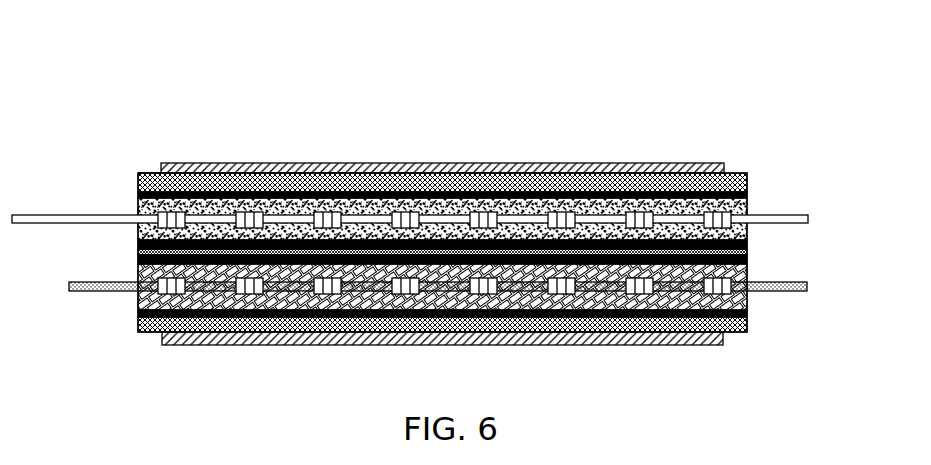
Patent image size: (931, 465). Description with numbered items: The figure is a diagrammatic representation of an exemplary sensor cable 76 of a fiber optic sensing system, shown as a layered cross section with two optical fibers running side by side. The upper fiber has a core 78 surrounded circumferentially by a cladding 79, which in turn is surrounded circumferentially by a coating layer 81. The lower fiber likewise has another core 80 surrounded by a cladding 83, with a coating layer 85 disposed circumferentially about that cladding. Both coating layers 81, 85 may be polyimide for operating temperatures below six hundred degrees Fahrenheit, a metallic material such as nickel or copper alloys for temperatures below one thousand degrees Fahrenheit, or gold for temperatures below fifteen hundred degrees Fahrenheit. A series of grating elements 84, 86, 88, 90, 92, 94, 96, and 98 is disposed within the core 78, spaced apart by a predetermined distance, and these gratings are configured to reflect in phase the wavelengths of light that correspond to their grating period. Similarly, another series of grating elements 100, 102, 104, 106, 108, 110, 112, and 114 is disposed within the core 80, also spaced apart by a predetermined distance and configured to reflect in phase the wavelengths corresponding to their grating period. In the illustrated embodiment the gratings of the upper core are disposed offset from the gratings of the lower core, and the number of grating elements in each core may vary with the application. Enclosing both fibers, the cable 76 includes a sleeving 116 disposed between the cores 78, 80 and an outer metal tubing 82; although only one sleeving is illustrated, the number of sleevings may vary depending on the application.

The cable 76 is at (750, 57).
The core 78 is at (62, 215).
The cladding 79 is at (137, 233).
The core 80 is at (75, 292).
The coating layer 81 is at (137, 191).
The metal tubing 82 is at (460, 163).
The cladding 83 is at (747, 300).
The grating element 84 is at (186, 170).
The coating layer 85 is at (747, 262).
The grating element 86 is at (262, 185).
The grating element 88 is at (336, 185).
The grating element 90 is at (408, 185).
The grating element 92 is at (490, 185).
The grating element 94 is at (573, 185).
The grating element 96 is at (650, 185).
The grating element 98 is at (736, 153).
The grating element 100 is at (148, 333).
The grating element 102 is at (227, 322).
The grating element 104 is at (305, 322).
The grating element 106 is at (383, 322).
The grating element 108 is at (460, 322).
The grating element 110 is at (538, 322).
The grating element 112 is at (616, 322).
The grating element 114 is at (693, 333).
The sleeving 116 is at (147, 172).